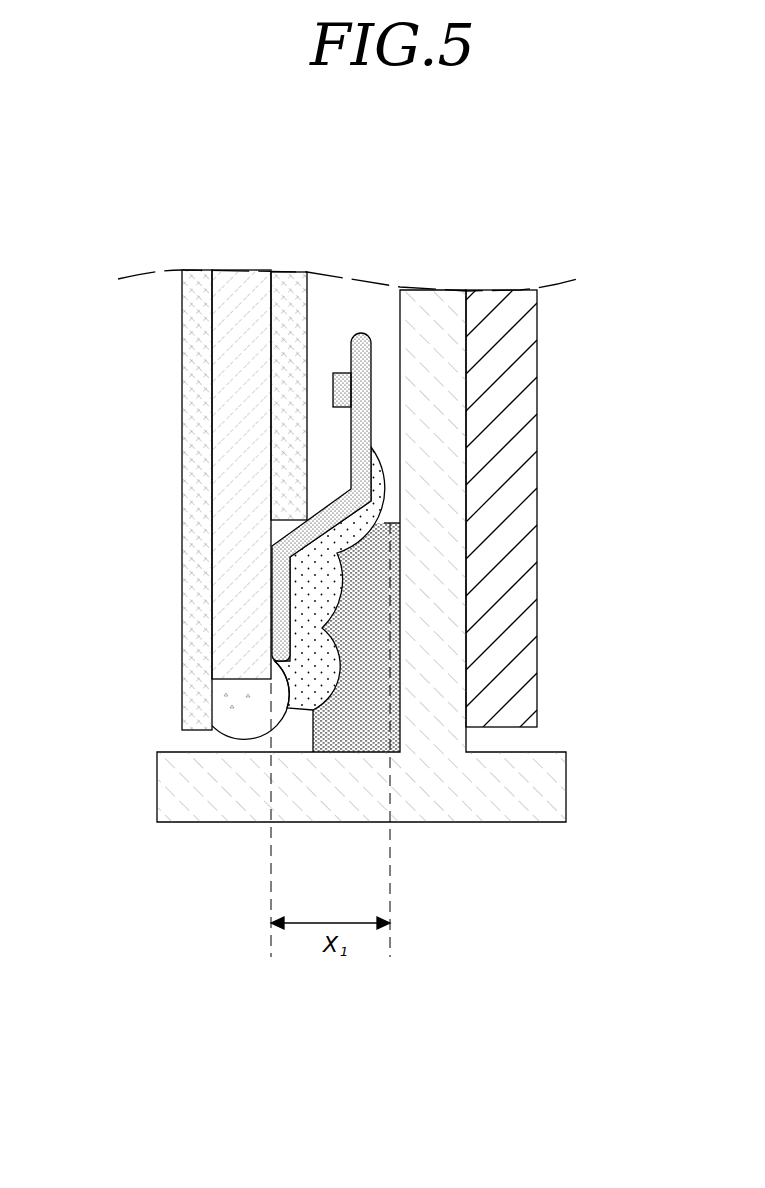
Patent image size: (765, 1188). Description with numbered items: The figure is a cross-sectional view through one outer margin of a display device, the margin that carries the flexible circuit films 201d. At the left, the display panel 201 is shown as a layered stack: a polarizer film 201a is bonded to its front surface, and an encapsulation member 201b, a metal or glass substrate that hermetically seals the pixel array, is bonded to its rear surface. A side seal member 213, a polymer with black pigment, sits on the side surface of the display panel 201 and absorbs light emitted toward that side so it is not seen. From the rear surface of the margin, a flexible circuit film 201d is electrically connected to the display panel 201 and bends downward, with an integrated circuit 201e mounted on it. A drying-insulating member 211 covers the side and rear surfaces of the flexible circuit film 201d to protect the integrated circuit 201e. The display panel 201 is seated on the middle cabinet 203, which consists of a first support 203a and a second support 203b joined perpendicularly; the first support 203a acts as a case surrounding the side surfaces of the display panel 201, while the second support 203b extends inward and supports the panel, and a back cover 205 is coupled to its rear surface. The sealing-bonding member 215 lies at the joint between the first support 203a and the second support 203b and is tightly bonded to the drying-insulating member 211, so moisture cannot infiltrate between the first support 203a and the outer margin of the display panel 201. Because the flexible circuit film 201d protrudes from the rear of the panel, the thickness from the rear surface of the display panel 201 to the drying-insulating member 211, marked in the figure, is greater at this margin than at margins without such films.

The display panel 201 is at (240, 465).
The polarizer film 201a is at (193, 333).
The encapsulation member 201b is at (290, 360).
The flexible circuit film 201d is at (272, 585).
The integrated circuit 201e is at (344, 377).
The middle cabinet 203 is at (361, 649).
The first support 203a is at (397, 803).
The second support 203b is at (425, 710).
The back cover 205 is at (527, 672).
The drying-insulating member 211 is at (305, 647).
The side seal member 213 is at (227, 708).
The sealing-bonding member 215 is at (333, 733).